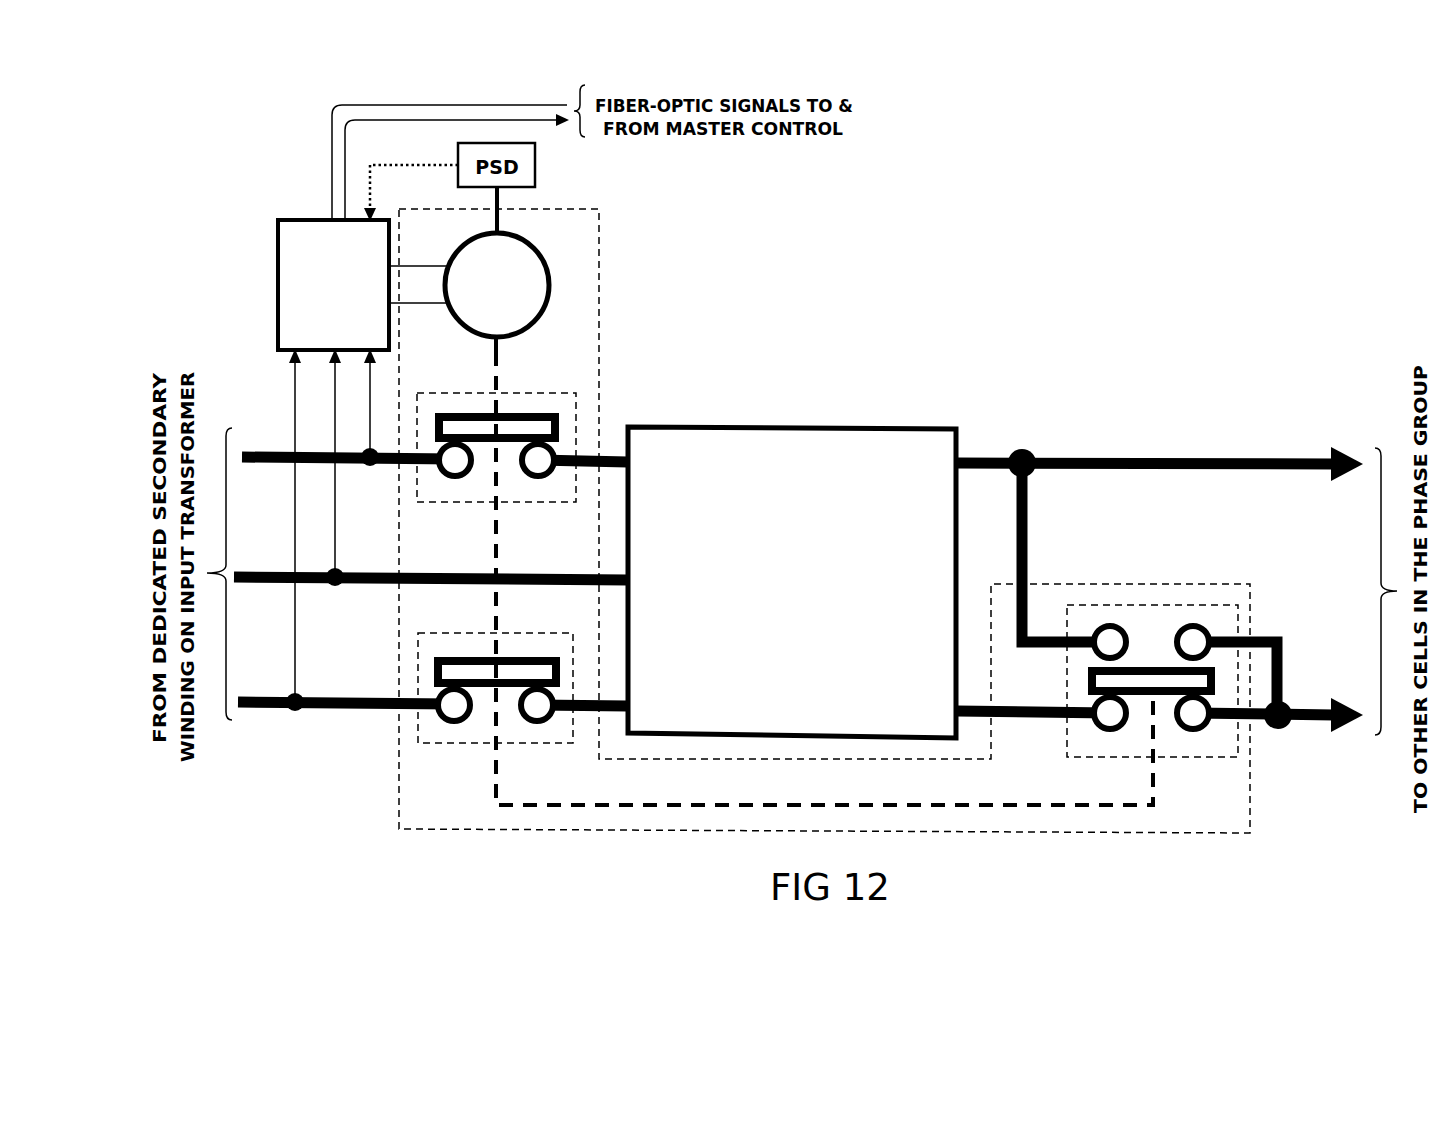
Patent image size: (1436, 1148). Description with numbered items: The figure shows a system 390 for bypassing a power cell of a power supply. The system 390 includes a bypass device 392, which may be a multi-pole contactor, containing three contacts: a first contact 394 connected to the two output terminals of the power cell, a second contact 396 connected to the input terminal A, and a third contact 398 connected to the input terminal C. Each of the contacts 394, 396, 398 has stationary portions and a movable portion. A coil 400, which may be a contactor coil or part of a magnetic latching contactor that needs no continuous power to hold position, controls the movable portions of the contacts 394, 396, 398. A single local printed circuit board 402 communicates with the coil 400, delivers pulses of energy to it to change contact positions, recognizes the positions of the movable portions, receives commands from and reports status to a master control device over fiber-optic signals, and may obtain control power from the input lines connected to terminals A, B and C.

The system 390 is at (1220, 203).
The bypass device 392 is at (1110, 834).
The first contact 394 is at (1174, 605).
The second contact 396 is at (549, 393).
The third contact 398 is at (467, 745).
The coil 400 is at (549, 291).
The local printed circuit board 402 is at (293, 218).